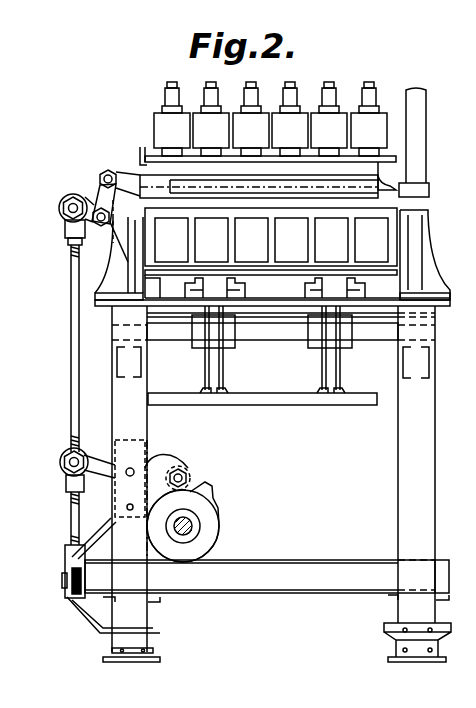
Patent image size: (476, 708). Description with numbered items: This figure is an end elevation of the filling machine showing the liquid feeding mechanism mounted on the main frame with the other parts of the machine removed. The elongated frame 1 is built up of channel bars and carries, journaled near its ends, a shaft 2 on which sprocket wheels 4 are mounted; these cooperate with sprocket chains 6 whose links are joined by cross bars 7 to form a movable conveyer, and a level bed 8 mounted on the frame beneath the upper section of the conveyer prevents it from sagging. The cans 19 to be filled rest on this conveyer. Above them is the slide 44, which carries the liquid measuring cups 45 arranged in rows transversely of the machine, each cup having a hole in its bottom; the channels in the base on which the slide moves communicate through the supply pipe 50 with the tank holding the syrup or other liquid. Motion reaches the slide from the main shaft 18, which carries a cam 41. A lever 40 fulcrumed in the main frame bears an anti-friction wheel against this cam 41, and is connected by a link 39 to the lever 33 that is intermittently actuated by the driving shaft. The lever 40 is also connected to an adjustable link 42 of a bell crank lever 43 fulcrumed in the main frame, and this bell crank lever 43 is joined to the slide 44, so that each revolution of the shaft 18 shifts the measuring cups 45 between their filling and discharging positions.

The frame 1 is at (268, 436).
The shaft 2 is at (257, 337).
The sprocket wheels 4 is at (205, 364).
The sprocket chains 6 is at (203, 396).
The cross bars 7 is at (262, 270).
The level bed 8 is at (229, 285).
The main shaft 18 is at (192, 527).
The cans 19 is at (271, 241).
The lever 33 is at (66, 590).
The link 39 is at (57, 518).
The lever 40 is at (87, 470).
The cam 41 is at (182, 508).
The adjustable link 42 is at (59, 348).
The bell crank lever 43 is at (95, 197).
The slide 44 is at (130, 170).
The liquid measuring cups 45 is at (270, 119).
The supply pipe 50 is at (424, 147).